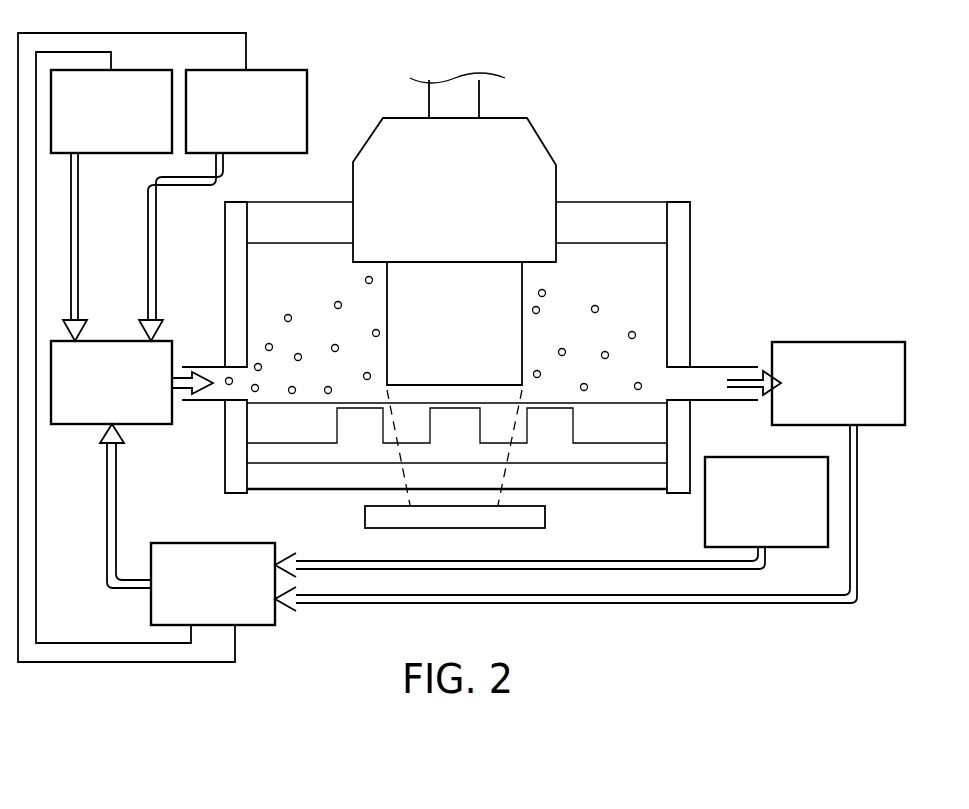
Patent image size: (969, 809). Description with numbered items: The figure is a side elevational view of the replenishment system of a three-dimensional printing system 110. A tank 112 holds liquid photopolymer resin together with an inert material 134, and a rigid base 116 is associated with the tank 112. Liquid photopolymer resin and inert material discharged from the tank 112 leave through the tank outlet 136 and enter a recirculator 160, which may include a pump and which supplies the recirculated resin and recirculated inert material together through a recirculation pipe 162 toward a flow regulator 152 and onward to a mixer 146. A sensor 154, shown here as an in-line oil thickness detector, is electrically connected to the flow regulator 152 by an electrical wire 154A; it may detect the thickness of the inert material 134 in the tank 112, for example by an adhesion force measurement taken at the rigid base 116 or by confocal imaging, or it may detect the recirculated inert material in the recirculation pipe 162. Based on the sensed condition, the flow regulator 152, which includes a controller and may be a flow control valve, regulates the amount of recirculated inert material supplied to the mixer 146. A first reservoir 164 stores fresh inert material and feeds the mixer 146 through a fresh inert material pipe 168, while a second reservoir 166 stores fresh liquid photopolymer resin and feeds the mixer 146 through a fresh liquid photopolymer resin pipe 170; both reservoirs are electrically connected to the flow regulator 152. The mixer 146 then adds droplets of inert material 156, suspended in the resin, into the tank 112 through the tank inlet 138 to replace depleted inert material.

The 3D printing system 110 is at (748, 100).
The tank 112 is at (692, 265).
The rigid base 116 is at (540, 138).
The inert material 134 is at (651, 400).
The tank outlet 136 is at (745, 365).
The tank inlet 138 is at (200, 366).
The mixer 146 is at (140, 426).
The flow regulator 152 is at (208, 542).
The sensor 154 is at (735, 456).
The electrical wire 154A is at (585, 559).
The droplets of inert material 156 is at (286, 315).
The recirculator 160 is at (860, 341).
The recirculation pipe 162 is at (668, 604).
The first reservoir 164 is at (140, 70).
The second reservoir 166 is at (278, 70).
The fresh inert material pipe 168 is at (79, 232).
The fresh liquid photopolymer resin pipe 170 is at (158, 276).